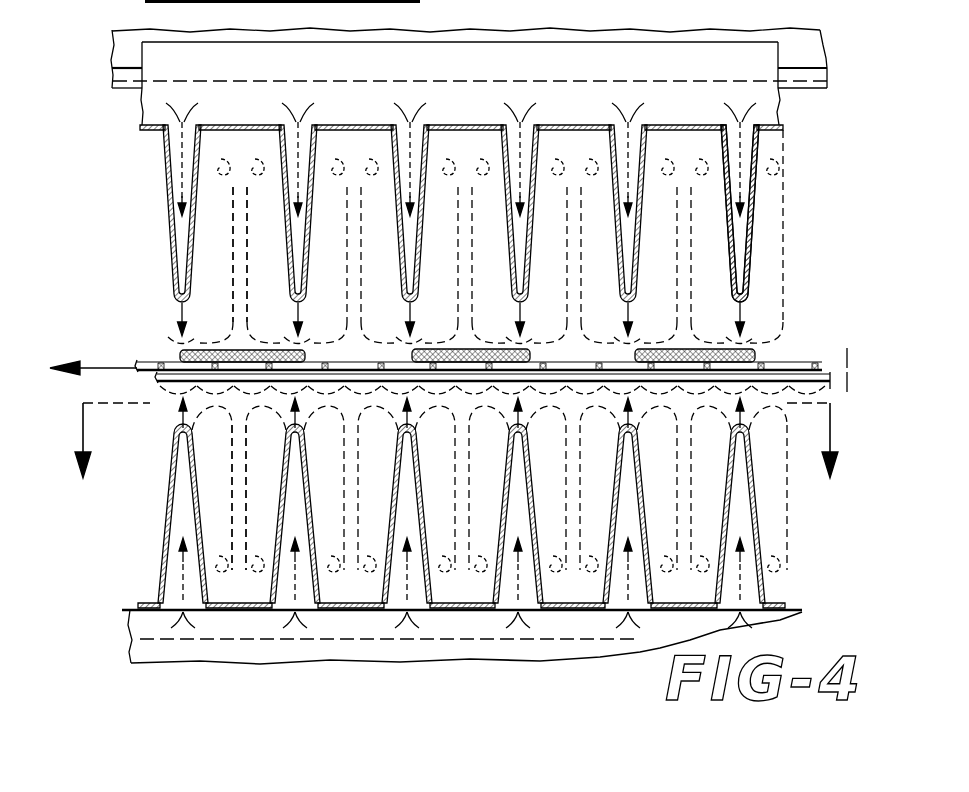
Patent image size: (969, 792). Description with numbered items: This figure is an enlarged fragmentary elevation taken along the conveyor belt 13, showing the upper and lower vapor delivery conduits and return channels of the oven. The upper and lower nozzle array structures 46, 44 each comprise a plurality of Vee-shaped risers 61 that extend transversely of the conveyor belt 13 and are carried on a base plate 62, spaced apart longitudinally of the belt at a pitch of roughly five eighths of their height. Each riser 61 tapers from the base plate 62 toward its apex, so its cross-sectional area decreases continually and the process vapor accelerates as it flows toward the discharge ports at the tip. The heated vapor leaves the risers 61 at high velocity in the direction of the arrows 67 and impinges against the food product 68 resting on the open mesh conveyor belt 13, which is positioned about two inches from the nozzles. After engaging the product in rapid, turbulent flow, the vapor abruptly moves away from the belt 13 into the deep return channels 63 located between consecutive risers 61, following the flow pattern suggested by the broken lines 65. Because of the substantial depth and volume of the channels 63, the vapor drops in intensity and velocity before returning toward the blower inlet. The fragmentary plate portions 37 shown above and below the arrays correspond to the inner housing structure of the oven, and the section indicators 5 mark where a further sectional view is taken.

The sidewall 37 is at (805, 50).
The base plate 62 is at (228, 133).
The Vee-shaped riser 61 is at (172, 247).
The nozzle array structure 46 is at (752, 274).
The nozzle array structure 44 is at (764, 533).
The arrows 67 is at (182, 313).
The return channel 63 is at (474, 279).
The broken lines 65 is at (233, 272).
The conveyor belt 13 is at (108, 363).
The food product 68 is at (405, 360).
The section line 5 is at (457, 455).